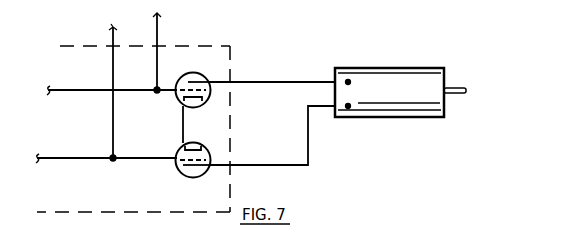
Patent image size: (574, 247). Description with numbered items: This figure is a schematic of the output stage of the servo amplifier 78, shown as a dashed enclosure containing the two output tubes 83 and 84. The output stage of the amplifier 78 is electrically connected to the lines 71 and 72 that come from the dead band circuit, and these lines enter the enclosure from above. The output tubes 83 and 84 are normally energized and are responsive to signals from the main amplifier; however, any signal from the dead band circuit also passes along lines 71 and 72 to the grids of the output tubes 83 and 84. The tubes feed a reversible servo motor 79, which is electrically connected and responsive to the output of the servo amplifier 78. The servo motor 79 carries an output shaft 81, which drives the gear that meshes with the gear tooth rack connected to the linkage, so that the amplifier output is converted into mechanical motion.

The line from the dead band circuit 71 is at (85, 85).
The line from the dead band circuit 72 is at (172, 51).
The servo amplifier 78 is at (195, 60).
The reversible servo motor 79 is at (389, 74).
The output shaft 81 is at (465, 73).
The output tube 83 is at (220, 80).
The output tube 84 is at (174, 167).